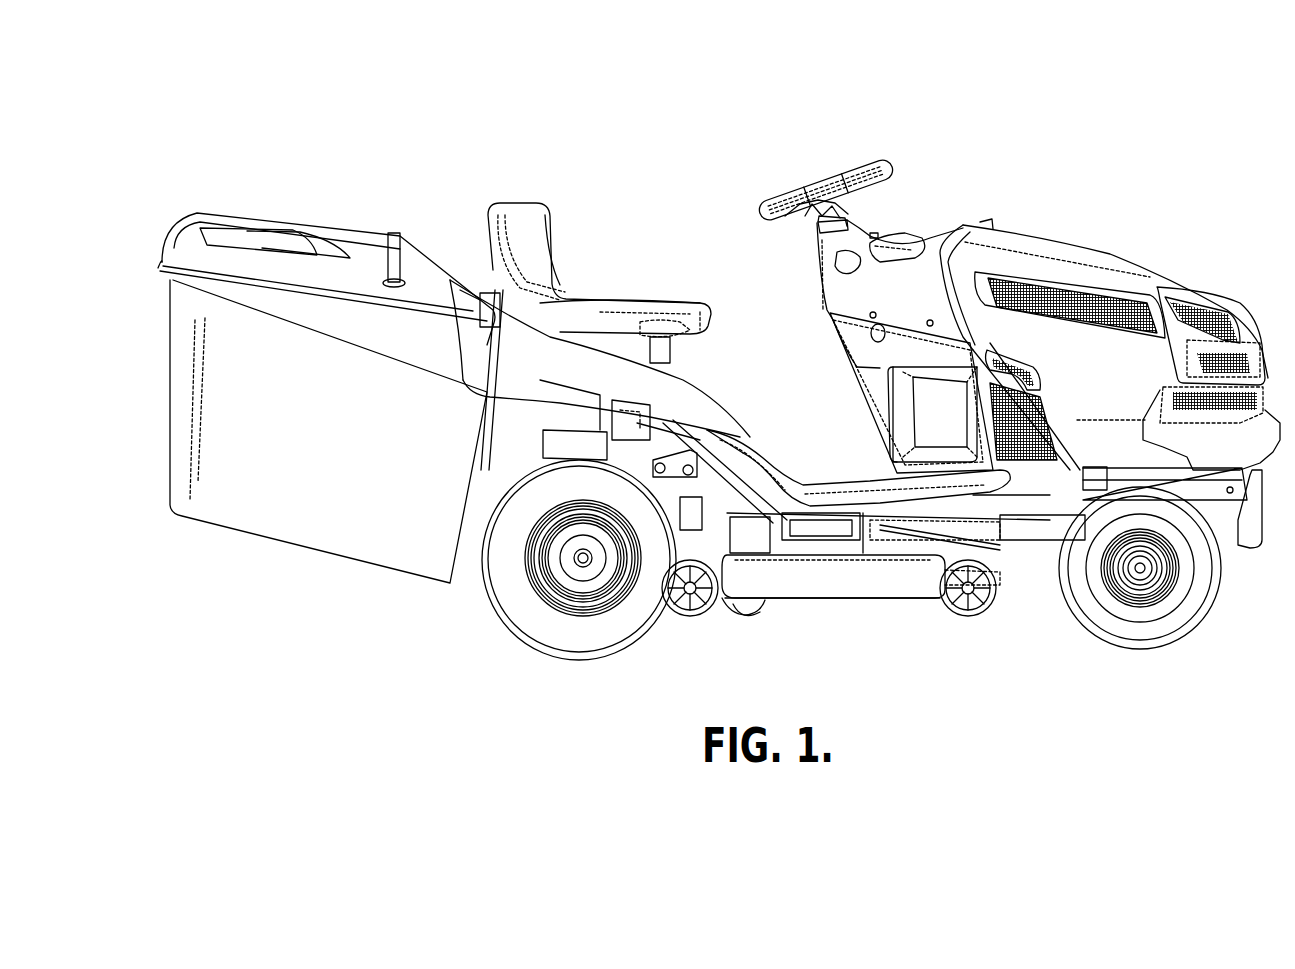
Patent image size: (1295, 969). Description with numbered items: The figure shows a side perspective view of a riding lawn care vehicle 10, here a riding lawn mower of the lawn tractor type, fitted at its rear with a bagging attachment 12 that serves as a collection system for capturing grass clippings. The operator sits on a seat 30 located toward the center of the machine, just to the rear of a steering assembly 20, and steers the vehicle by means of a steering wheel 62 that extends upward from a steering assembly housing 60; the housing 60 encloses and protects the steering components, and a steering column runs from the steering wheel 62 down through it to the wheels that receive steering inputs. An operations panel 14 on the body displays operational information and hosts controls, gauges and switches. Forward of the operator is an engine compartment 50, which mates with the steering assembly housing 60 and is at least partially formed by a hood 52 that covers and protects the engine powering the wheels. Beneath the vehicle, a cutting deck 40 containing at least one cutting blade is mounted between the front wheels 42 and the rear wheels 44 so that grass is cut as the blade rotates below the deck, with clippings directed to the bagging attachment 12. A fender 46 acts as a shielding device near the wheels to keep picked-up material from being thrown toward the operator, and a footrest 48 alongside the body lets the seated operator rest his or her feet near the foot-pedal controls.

The riding lawn care vehicle 10 is at (1098, 106).
The bagging attachment 12 is at (258, 198).
The operations panel 14 is at (914, 280).
The steering assembly 20 is at (830, 162).
The seat 30 is at (521, 214).
The cutting deck 40 is at (860, 588).
The front wheels 42 is at (1175, 615).
The rear wheels 44 is at (625, 630).
The fender 46 is at (492, 300).
The footrest 48 is at (862, 478).
The engine compartment 50 is at (1165, 260).
The hood 52 is at (1060, 263).
The steering assembly housing 60 is at (800, 275).
The steering wheel 62 is at (772, 200).